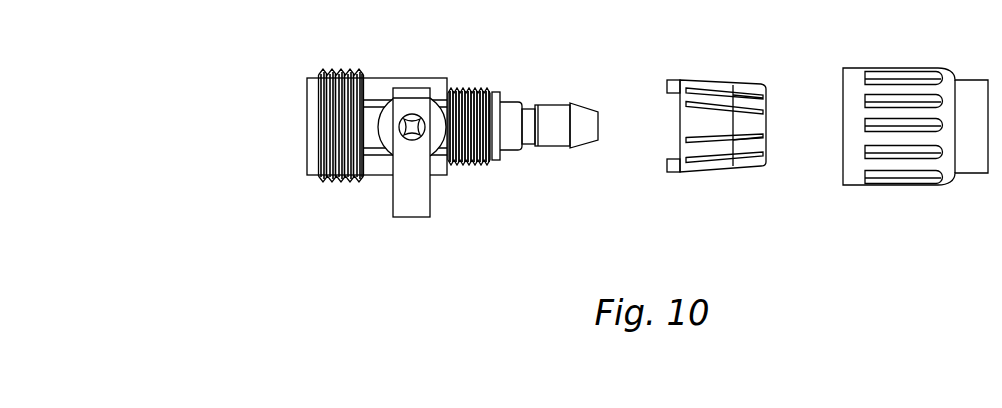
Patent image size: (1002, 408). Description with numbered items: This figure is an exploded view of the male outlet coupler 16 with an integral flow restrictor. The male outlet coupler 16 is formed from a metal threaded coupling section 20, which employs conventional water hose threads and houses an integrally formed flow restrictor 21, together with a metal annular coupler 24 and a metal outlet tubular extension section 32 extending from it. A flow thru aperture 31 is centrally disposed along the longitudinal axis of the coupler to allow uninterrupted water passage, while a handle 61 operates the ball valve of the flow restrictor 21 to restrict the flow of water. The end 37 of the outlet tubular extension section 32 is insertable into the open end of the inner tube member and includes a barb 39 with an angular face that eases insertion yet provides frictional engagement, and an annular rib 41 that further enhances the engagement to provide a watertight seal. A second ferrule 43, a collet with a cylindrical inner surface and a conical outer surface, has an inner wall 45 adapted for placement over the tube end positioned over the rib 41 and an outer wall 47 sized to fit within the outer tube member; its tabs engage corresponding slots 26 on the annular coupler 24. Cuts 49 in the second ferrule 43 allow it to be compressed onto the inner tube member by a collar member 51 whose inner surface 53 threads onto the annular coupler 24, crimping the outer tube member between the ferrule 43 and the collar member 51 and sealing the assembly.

The male outlet coupler 16 is at (242, 128).
The threaded coupling section 20 is at (324, 182).
The flow thru aperture 31 is at (307, 117).
The flow restrictor 21 is at (392, 158).
The handle 61 is at (417, 218).
The annular coupler 24 is at (466, 167).
The slots 26 is at (492, 90).
The barb 39 is at (508, 107).
The annular rib 41 is at (538, 147).
The outlet tubular extension section 32 is at (560, 139).
The end 37 is at (598, 112).
The inner wall 45 is at (680, 124).
The outer wall 47 is at (696, 170).
The cuts 49 is at (678, 110).
The second ferrule 43 is at (750, 164).
The collar member 51 is at (918, 186).
The inner surface 53 is at (880, 128).